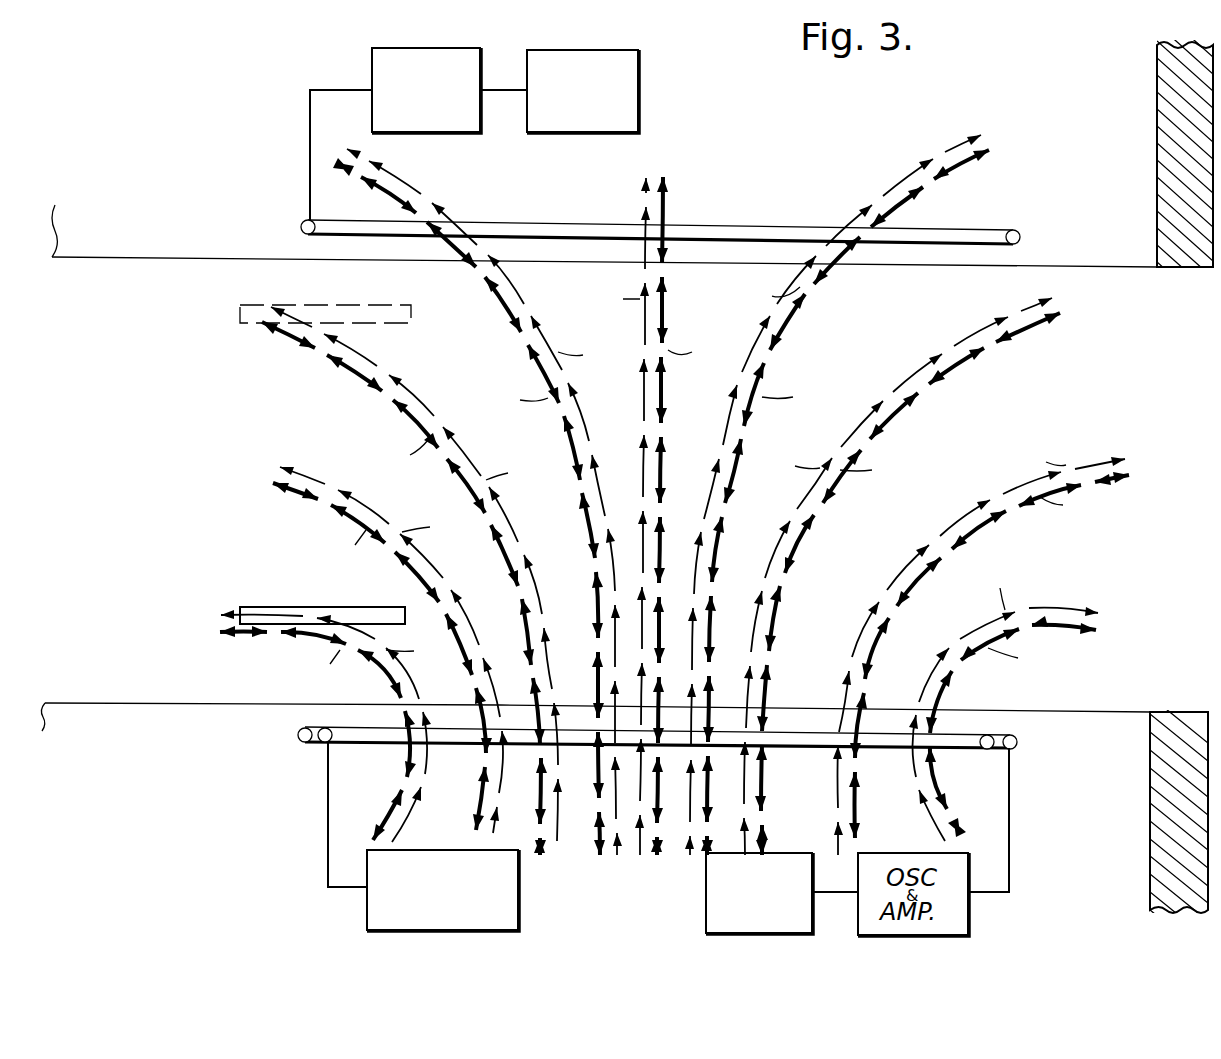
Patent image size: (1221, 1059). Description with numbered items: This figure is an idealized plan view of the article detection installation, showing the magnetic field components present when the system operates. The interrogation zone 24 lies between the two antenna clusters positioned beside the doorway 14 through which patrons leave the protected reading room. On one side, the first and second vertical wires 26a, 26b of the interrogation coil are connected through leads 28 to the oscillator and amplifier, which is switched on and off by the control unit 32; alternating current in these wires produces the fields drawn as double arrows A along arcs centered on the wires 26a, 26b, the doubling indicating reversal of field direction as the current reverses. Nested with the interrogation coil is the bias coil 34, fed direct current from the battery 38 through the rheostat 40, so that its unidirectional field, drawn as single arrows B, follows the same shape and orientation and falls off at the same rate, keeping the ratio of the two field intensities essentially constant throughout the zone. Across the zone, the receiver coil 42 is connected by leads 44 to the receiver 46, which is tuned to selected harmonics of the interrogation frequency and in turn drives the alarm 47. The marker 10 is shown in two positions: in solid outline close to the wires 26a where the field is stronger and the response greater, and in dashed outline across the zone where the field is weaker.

The marker 10 is at (240, 315).
The doorway 14 is at (1146, 280).
The interrogation zone 24 is at (215, 476).
The first vertical wire 26a is at (305, 746).
The second vertical wire 26b is at (1020, 745).
The leads 28 is at (1010, 842).
The control unit 32 is at (707, 917).
The bias coil 34 is at (992, 750).
The battery 38 is at (388, 890).
The rheostat 40 is at (367, 911).
The receiver coil 42 is at (802, 229).
The leads 44 is at (310, 187).
The receiver 46 is at (372, 60).
The alarm 47 is at (639, 105).